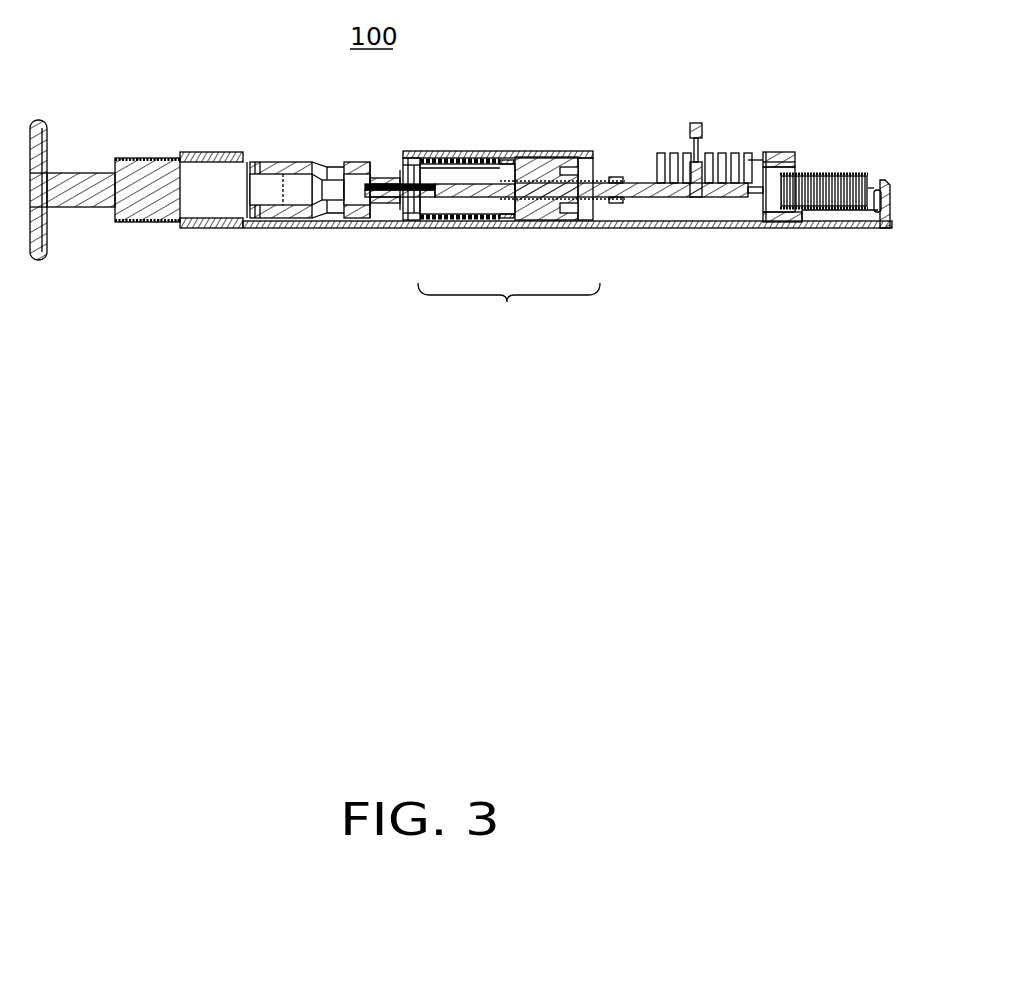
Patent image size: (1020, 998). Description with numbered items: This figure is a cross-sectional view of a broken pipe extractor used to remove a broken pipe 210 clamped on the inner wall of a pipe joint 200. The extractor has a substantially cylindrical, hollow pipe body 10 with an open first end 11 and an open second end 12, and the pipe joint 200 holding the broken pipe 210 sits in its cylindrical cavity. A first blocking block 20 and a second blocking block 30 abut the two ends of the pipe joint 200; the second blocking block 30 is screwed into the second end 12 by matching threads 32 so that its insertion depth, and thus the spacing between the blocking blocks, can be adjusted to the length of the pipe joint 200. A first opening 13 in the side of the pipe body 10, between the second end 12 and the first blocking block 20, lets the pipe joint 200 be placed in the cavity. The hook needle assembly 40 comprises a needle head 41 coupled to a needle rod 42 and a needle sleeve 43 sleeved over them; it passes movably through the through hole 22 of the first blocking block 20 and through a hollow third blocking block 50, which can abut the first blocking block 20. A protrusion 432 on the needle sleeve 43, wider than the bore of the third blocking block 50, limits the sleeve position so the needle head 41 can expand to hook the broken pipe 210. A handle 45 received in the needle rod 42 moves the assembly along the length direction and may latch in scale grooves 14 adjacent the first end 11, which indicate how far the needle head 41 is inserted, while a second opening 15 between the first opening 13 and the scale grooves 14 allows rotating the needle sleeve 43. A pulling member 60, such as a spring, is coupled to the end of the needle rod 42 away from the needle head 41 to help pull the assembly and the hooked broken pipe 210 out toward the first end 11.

The pipe body 10 is at (448, 152).
The first end 11 is at (789, 145).
The second end 12 is at (200, 238).
The first opening 13 is at (328, 158).
The scale grooves 14 is at (729, 152).
The second opening 15 is at (645, 160).
The first blocking block 20 is at (487, 158).
The through hole 22 is at (474, 166).
The second blocking block 30 is at (118, 158).
The threads 32 is at (155, 222).
The hook needle assembly 40 is at (509, 308).
The needle head 41 is at (421, 200).
The needle rod 42 is at (488, 192).
The needle sleeve 43 is at (546, 170).
The handle 45 is at (690, 184).
The third blocking block 50 is at (544, 157).
The pulling member 60 is at (831, 173).
The pipe joint 200 is at (258, 164).
The broken pipe 210 is at (390, 204).
The protrusion 432 is at (615, 177).